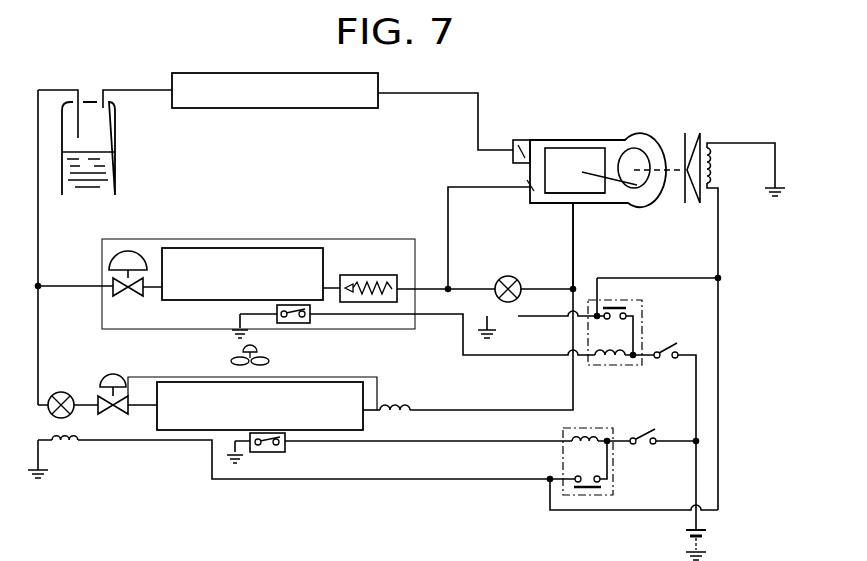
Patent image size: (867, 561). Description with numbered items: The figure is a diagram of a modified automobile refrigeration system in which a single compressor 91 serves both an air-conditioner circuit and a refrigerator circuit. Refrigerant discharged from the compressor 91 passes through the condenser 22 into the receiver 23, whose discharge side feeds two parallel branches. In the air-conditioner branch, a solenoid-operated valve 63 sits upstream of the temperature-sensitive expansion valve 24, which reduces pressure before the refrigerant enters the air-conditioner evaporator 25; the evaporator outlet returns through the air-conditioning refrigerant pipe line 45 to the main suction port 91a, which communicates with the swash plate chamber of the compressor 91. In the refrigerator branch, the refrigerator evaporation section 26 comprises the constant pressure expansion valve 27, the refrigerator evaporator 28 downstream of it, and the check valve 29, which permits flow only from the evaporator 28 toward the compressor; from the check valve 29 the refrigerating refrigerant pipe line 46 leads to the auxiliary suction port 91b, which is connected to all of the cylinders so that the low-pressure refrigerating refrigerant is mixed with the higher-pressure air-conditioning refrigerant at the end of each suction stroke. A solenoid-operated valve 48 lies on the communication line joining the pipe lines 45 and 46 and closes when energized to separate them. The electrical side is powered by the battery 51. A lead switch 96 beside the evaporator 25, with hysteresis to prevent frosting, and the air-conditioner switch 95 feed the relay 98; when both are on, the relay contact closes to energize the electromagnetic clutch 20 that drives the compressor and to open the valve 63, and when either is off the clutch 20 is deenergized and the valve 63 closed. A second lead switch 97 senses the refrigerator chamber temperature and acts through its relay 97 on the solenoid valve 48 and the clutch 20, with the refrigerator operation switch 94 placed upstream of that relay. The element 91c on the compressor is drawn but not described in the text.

The electromagnetic clutch 20 is at (704, 140).
The condenser 22 is at (372, 109).
The receiver 23 is at (116, 138).
The temperature-sensitive expansion valve 24 is at (122, 417).
The air-conditioner evaporator 25 is at (355, 377).
The refrigerator evaporation section 26 is at (100, 255).
The constant pressure expansion valve 27 is at (131, 250).
The refrigerator evaporator 28 is at (303, 247).
The check valve 29 is at (382, 275).
The air-conditioning refrigerant pipe line 45 is at (575, 253).
The refrigerating refrigerant pipe line 46 is at (448, 207).
The solenoid-operated valve 48 is at (520, 282).
The battery 51 is at (706, 540).
The solenoid-operated valve 63 is at (60, 429).
The compressor 91 is at (623, 137).
The main suction port 91a is at (572, 204).
The auxiliary suction port 91b is at (526, 196).
The compressor switch 91c is at (515, 148).
The refrigerator operation switch 94 is at (666, 362).
The air-conditioner switch 95 is at (643, 445).
The lead switch 96 is at (290, 448).
The second lead switch 97 is at (644, 313).
The relay 98 is at (614, 470).